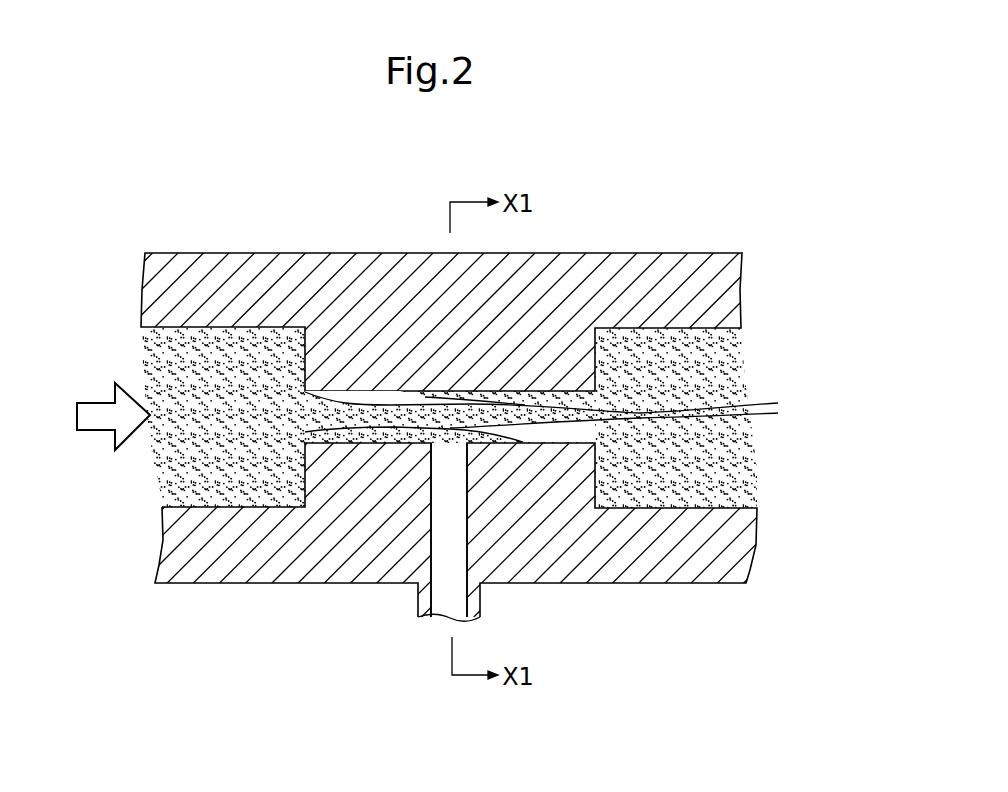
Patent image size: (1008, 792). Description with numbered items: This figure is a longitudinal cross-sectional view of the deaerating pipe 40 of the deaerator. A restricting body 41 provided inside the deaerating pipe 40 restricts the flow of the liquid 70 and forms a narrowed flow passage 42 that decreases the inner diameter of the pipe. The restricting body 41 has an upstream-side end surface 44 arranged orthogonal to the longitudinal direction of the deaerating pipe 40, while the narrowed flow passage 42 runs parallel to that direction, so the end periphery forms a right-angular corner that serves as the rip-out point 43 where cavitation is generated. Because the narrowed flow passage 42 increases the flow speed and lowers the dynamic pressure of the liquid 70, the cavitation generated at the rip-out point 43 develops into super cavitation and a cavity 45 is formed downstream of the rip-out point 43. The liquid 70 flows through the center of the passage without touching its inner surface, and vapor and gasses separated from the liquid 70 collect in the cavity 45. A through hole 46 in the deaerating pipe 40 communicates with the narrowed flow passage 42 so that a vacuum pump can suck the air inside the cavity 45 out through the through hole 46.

The deaerating pipe 40 is at (273, 253).
The restricting body 41 is at (597, 374).
The narrowed flow passage 42 is at (553, 443).
The rip-out point 43 is at (299, 448).
The upstream-side end surface 44 is at (300, 462).
The cavity 45 is at (564, 416).
The through hole 46 is at (470, 598).
The liquid 70 is at (716, 490).